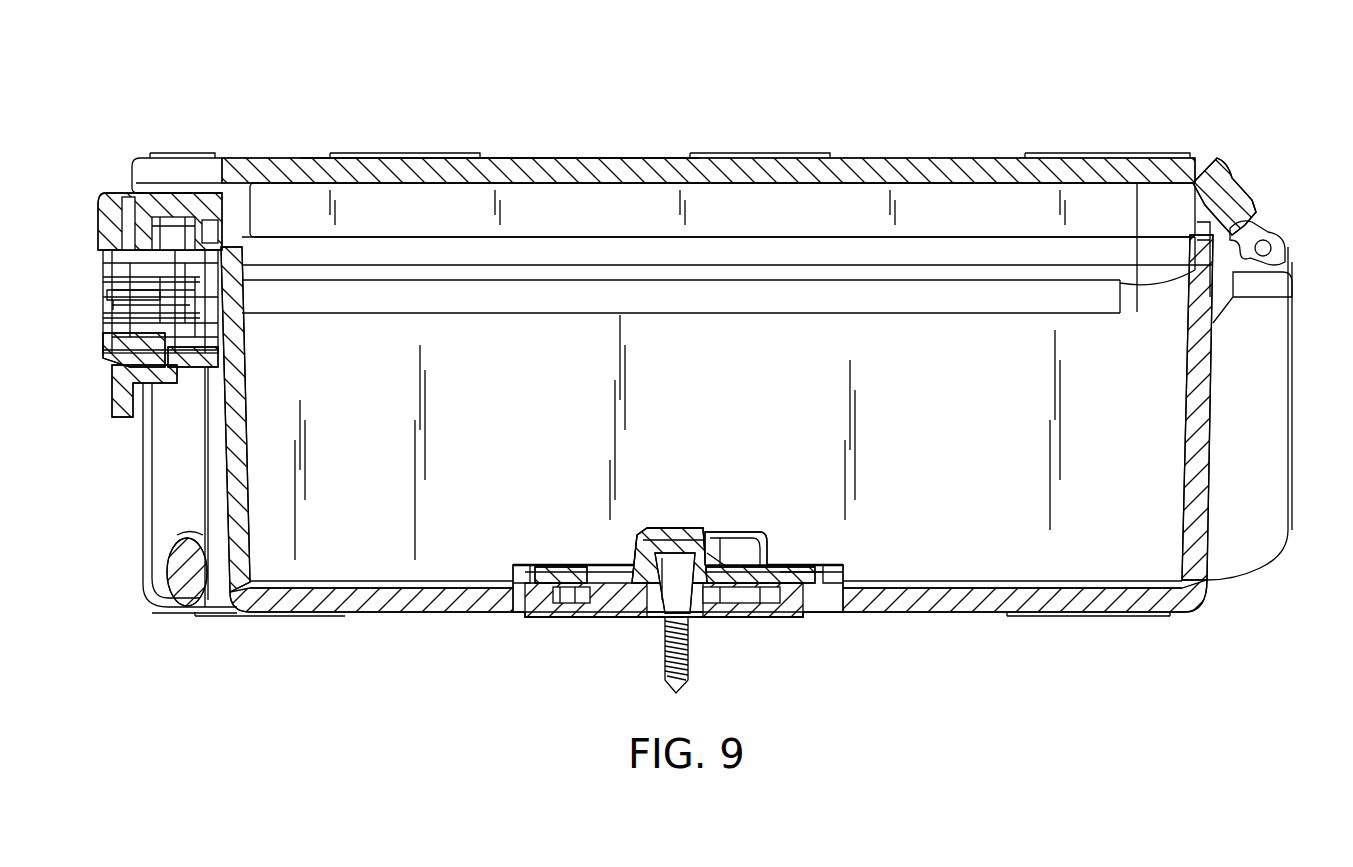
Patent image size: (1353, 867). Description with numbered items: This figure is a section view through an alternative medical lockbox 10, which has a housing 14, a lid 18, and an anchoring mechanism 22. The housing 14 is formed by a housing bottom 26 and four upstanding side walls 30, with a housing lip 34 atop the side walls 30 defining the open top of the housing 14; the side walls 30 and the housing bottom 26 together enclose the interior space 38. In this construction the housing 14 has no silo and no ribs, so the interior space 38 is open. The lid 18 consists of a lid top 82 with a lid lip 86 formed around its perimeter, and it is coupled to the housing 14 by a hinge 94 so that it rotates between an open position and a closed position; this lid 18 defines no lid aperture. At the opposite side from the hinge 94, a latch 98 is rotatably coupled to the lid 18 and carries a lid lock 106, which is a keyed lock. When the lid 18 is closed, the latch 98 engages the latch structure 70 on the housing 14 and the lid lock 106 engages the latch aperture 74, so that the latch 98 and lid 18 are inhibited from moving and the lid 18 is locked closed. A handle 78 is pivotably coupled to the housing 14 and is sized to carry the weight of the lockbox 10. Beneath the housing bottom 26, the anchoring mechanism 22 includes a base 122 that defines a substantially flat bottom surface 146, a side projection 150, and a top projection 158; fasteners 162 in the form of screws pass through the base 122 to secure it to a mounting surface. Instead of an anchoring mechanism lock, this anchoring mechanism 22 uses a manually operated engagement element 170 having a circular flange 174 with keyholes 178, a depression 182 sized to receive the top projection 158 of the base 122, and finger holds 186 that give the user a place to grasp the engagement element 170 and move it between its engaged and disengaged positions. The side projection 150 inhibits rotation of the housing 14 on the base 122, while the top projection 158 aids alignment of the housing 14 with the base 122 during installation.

The lockbox 10 is at (472, 88).
The housing 14 is at (762, 425).
The lid 18 is at (694, 170).
The anchoring mechanism 22 is at (668, 570).
The housing bottom 26 is at (345, 596).
The side walls 30 is at (232, 376).
The housing lip 34 is at (1233, 232).
The interior space 38 is at (900, 362).
The latch structure 70 is at (183, 355).
The latch aperture 74 is at (177, 340).
The handle 78 is at (187, 582).
The lid top 82 is at (445, 172).
The lid lip 86 is at (1246, 206).
The hinge 94 is at (1274, 250).
The latch 98 is at (115, 405).
The lid lock 106 is at (112, 295).
The base 122 is at (578, 628).
The bottom surface 146 is at (753, 617).
The side projection 150 is at (533, 608).
The top projection 158 is at (690, 557).
The fasteners 162 is at (665, 660).
The engagement element 170 is at (692, 532).
The circular flange 174 is at (812, 566).
The keyholes 178 is at (597, 574).
The depression 182 is at (652, 540).
The finger holds 186 is at (737, 548).